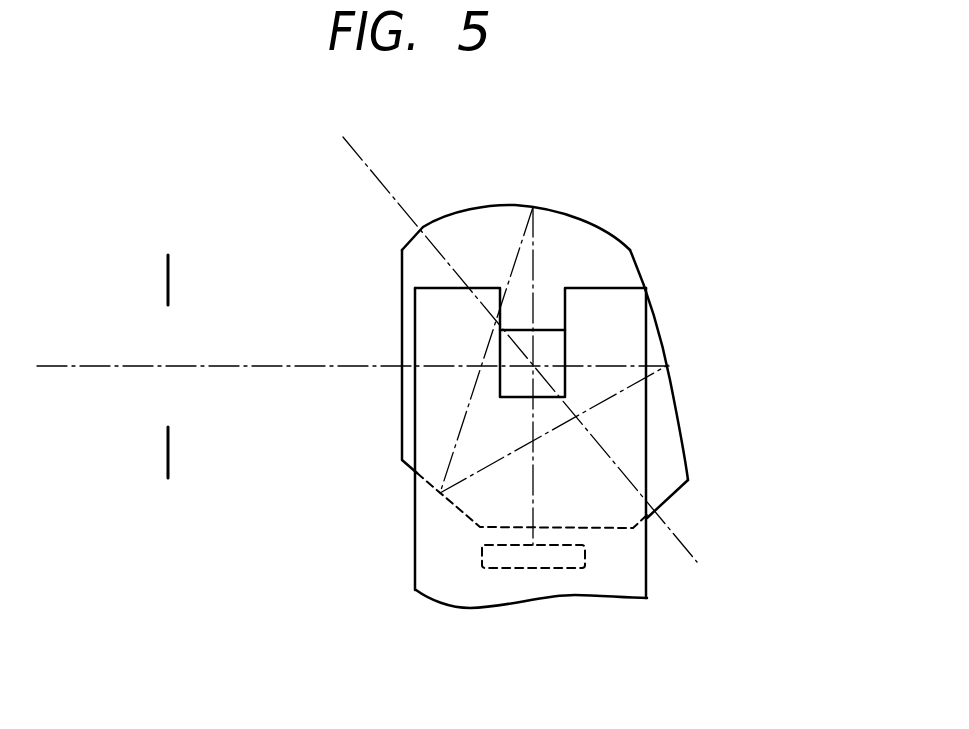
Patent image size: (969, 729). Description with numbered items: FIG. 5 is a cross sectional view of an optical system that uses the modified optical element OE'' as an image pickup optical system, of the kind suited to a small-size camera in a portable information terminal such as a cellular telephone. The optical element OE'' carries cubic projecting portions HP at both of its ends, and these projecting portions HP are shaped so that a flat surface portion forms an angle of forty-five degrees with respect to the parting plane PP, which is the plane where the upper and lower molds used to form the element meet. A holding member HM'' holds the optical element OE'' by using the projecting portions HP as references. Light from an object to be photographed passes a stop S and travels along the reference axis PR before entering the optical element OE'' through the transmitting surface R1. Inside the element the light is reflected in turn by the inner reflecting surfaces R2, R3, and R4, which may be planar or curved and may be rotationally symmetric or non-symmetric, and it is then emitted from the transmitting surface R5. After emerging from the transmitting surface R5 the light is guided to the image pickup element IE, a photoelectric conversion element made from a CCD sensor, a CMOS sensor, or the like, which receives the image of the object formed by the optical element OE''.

The stop S is at (167, 268).
The reference axis PR is at (327, 367).
The parting plane PP is at (383, 152).
The optical element OE'' is at (534, 372).
The transmitting surface R1 is at (402, 272).
The reflecting surface R2 is at (640, 268).
The reflecting surface R3 is at (457, 515).
The reflecting surface R4 is at (477, 203).
The transmitting surface R5 is at (600, 533).
The projecting portions HP is at (555, 347).
The image pickup element IE is at (500, 562).
The holding member HM'' is at (531, 639).